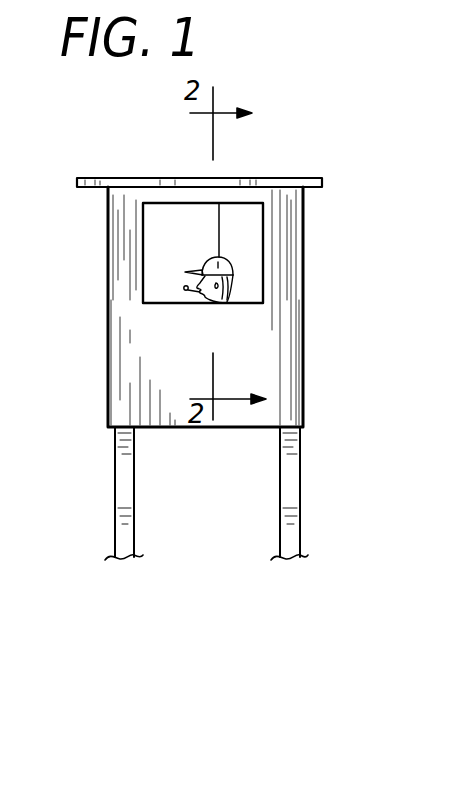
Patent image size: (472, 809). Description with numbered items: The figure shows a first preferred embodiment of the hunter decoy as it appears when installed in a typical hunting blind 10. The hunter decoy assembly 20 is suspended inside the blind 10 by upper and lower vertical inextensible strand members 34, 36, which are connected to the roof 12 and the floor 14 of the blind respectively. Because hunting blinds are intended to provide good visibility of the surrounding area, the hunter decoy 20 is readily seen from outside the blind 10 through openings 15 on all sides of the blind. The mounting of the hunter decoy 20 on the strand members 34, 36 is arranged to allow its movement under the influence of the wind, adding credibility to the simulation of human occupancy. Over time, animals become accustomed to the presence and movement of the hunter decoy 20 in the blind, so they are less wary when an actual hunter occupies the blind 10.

The blind 10 is at (305, 348).
The roof 12 is at (312, 178).
The floor 14 is at (243, 428).
The openings 15 is at (265, 269).
The hunter decoy assembly 20 is at (248, 255).
The upper vertical inextensible strand member 34 is at (222, 225).
The lower vertical inextensible strand member 36 is at (222, 333).